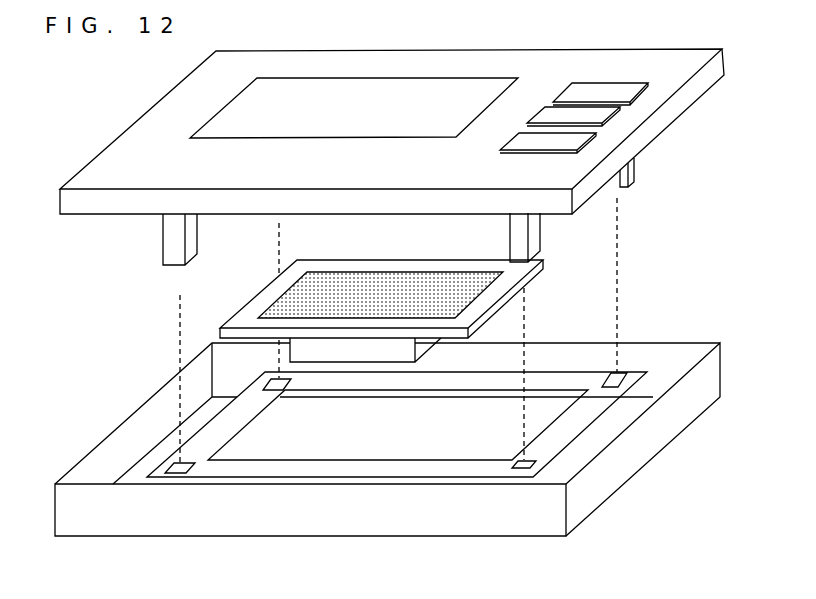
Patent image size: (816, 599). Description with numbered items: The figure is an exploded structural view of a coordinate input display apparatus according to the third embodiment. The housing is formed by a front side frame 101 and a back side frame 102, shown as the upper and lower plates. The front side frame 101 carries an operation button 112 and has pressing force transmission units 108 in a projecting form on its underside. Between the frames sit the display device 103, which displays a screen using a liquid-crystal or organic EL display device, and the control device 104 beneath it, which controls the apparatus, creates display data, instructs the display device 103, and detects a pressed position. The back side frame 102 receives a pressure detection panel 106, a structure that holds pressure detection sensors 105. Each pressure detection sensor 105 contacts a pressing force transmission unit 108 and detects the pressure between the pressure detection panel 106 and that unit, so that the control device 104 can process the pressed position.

The front side frame 101 is at (693, 102).
The back side frame 102 is at (373, 535).
The display device 103 is at (375, 257).
The control device 104 is at (420, 353).
The pressure detection sensor 105 is at (190, 459).
The pressure detection panel 106 is at (326, 459).
The pressing force transmission unit 108 is at (163, 247).
The operation button 112 is at (646, 84).